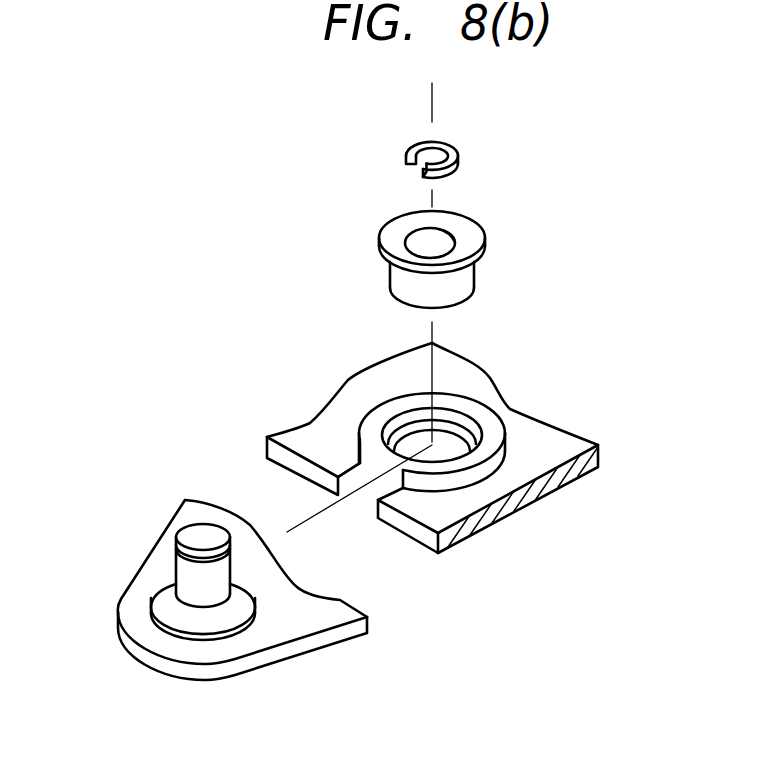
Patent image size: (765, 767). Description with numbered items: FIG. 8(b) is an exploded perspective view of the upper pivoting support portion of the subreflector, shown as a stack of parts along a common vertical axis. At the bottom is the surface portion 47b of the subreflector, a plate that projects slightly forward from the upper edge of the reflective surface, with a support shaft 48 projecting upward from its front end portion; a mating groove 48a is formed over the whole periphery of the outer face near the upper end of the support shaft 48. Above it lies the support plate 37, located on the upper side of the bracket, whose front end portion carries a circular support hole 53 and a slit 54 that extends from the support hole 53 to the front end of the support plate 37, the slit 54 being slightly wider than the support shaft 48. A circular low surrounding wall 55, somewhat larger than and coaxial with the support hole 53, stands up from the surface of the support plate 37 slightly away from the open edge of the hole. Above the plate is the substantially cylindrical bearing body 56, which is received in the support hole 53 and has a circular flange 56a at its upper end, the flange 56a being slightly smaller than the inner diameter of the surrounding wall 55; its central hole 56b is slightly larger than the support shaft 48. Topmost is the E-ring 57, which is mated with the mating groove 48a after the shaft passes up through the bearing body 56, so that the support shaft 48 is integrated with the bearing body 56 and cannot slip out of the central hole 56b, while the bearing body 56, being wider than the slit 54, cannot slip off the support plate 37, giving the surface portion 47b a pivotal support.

The support plate 37 is at (449, 447).
The surface portion 47b is at (226, 567).
The support shaft 48 is at (202, 535).
The mating groove 48a is at (200, 567).
The support hole 53 is at (455, 435).
The slit 54 is at (349, 480).
The surrounding wall 55 is at (468, 466).
The bearing body 56 is at (444, 245).
The flange 56a is at (388, 238).
The central hole 56b is at (448, 240).
The E-ring 57 is at (452, 145).